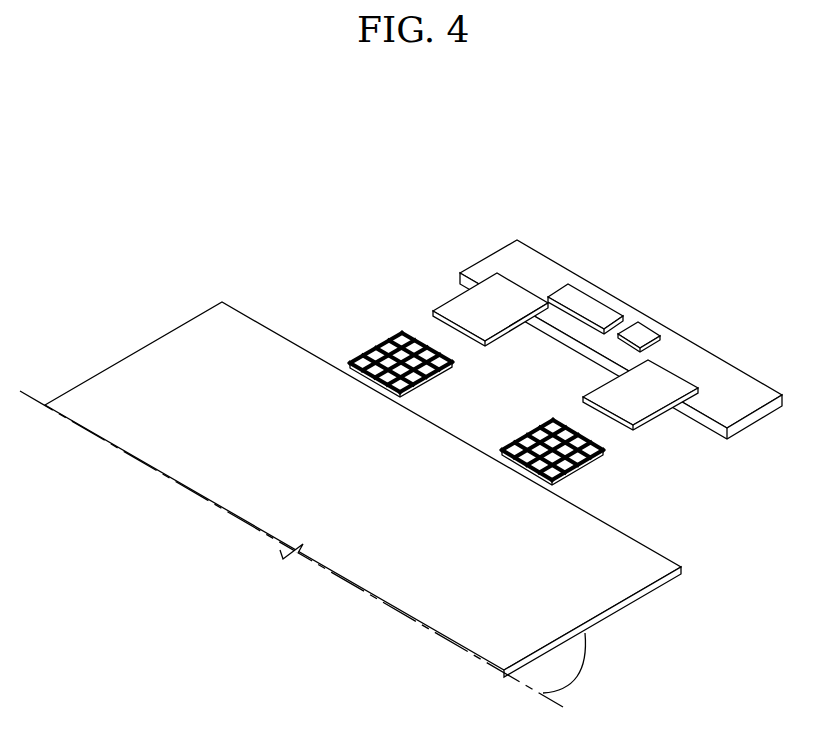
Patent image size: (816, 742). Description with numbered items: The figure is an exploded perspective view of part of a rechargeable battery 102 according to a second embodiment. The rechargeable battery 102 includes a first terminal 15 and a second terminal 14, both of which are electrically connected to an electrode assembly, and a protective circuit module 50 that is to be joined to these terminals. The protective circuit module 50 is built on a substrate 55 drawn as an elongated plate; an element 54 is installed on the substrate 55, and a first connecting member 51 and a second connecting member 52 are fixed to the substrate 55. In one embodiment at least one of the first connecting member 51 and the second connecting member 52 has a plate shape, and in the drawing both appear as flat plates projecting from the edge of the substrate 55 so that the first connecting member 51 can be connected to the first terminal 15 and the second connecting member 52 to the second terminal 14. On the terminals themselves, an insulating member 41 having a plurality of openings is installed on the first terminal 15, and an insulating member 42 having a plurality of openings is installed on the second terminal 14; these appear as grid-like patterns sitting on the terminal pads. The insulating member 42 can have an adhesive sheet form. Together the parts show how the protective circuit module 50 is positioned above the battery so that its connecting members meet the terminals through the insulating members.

The rechargeable battery 102 is at (130, 344).
The first terminal 15 is at (345, 363).
The insulating member 41 is at (401, 332).
The second terminal 14 is at (538, 481).
The insulating member 42 is at (603, 452).
The protective circuit module 50 is at (597, 339).
The first connecting member 51 is at (455, 305).
The second connecting member 52 is at (651, 413).
The element 54 is at (588, 300).
The substrate 55 is at (542, 262).